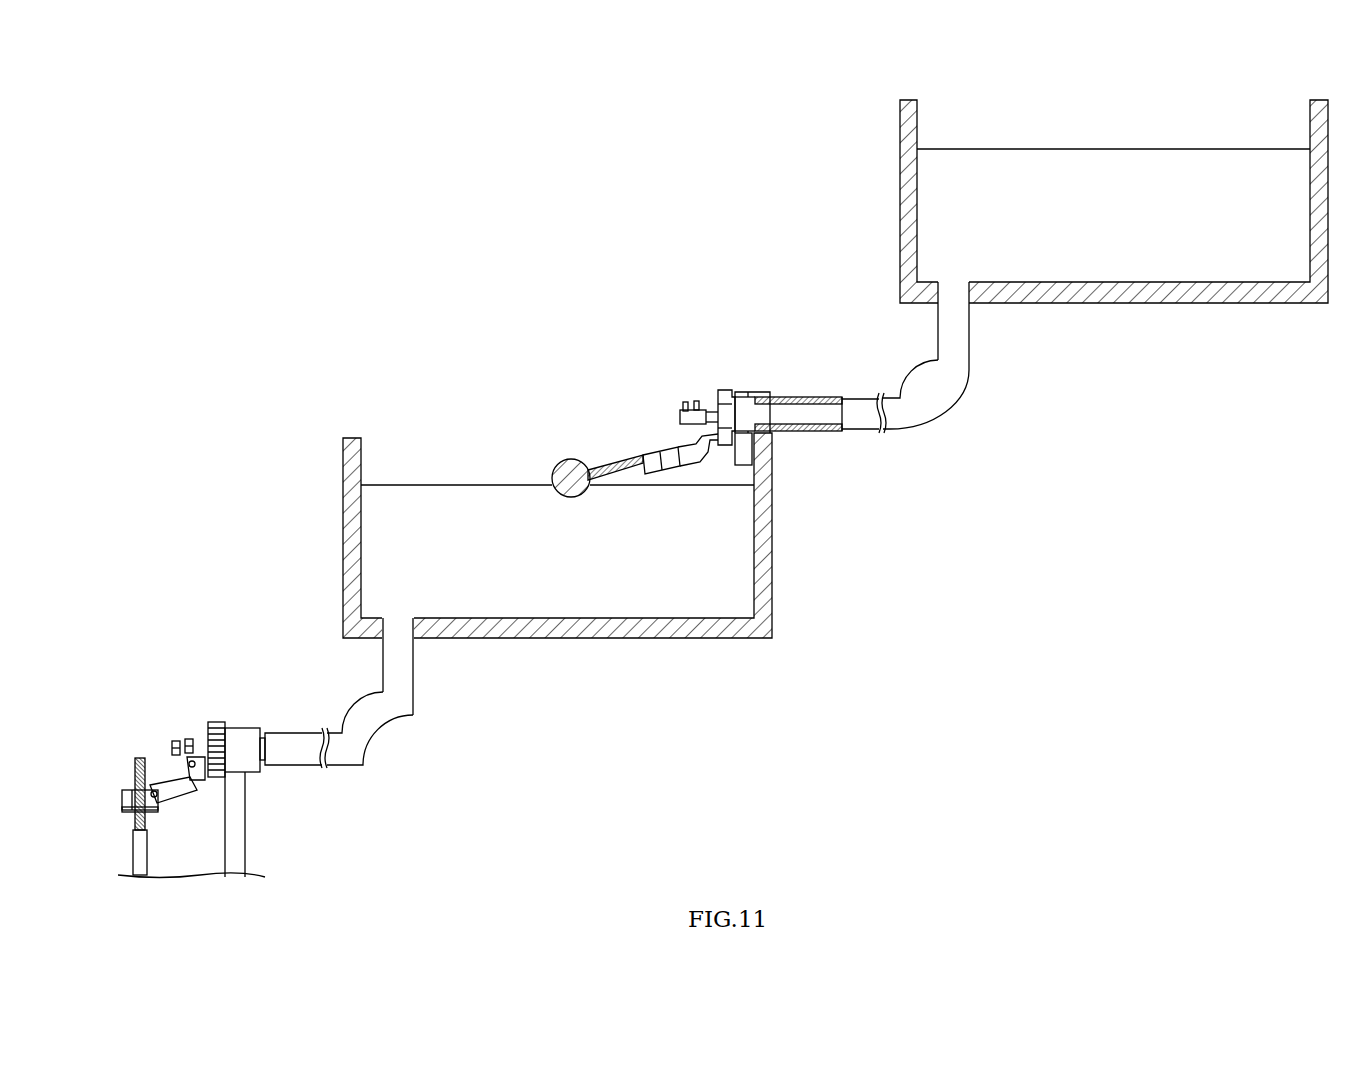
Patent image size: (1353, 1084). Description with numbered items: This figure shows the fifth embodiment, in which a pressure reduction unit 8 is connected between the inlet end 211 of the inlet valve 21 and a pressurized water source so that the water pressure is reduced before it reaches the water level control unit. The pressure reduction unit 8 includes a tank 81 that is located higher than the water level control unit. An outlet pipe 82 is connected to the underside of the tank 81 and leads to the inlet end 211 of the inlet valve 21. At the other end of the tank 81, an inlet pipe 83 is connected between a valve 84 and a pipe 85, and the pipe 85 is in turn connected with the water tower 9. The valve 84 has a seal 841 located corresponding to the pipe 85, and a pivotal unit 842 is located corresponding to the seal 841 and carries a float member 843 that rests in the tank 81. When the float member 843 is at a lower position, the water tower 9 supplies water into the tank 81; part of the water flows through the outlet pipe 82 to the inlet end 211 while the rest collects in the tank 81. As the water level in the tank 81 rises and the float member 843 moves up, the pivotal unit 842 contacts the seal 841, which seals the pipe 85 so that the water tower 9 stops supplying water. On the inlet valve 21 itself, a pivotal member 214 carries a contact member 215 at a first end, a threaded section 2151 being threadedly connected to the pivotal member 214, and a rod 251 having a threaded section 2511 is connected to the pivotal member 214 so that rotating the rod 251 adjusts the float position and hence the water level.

The pressure reduction unit 8 is at (720, 422).
The water tower 9 is at (905, 112).
The tank 81 is at (348, 446).
The outlet pipe 82 is at (373, 743).
The inlet pipe 83 is at (753, 462).
The valve 84 is at (748, 393).
The seal 841 is at (718, 400).
The pivotal unit 842 is at (690, 450).
The float member 843 is at (566, 462).
The pipe 85 is at (807, 400).
The inlet valve 21 is at (243, 728).
The inlet end 211 is at (262, 733).
The threaded section 2151 is at (200, 737).
The contact member 215 is at (172, 748).
The pivotal member 214 is at (170, 785).
The threaded section 2511 is at (137, 825).
The rod 251 is at (140, 837).